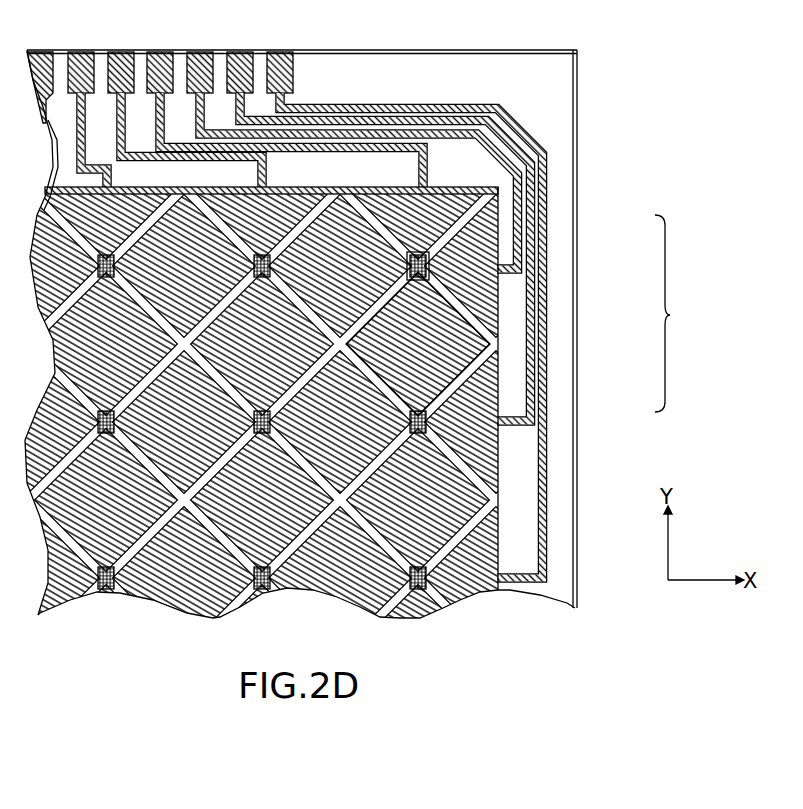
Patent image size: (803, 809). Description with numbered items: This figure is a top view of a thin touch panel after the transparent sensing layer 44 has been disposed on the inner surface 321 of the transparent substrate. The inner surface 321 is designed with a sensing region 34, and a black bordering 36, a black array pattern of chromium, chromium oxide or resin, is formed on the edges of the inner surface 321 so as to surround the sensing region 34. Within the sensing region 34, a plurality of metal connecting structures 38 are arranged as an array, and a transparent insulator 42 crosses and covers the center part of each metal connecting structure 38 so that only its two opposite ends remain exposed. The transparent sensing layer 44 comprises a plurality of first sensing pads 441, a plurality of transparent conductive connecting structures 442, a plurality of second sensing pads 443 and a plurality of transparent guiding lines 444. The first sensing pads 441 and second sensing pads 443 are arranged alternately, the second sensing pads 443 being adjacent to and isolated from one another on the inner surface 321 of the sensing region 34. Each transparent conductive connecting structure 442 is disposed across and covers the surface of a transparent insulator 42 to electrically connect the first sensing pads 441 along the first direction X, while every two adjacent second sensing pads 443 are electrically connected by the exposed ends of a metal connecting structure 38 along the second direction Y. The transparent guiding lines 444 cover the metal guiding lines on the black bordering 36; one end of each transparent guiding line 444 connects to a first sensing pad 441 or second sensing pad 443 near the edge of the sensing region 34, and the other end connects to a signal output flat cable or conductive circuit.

The inner surface 321 is at (140, 45).
The sensing region 34 is at (183, 195).
The black bordering 36 is at (555, 566).
The metal connecting structure 38 is at (428, 262).
The transparent insulator 42 is at (430, 264).
The transparent sensing layer 44 is at (681, 313).
The first sensing pad 441 is at (484, 265).
The transparent conductive connecting structure 442 is at (458, 272).
The second sensing pad 443 is at (480, 240).
The transparent guiding line 444 is at (543, 401).